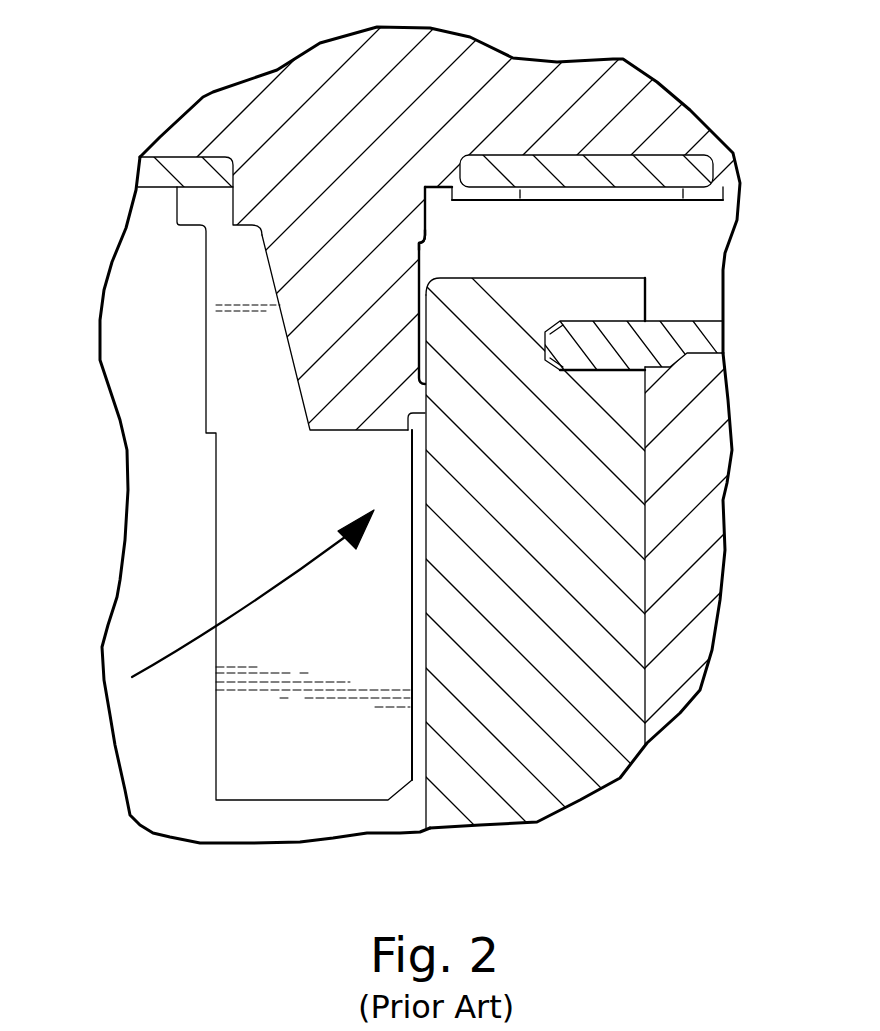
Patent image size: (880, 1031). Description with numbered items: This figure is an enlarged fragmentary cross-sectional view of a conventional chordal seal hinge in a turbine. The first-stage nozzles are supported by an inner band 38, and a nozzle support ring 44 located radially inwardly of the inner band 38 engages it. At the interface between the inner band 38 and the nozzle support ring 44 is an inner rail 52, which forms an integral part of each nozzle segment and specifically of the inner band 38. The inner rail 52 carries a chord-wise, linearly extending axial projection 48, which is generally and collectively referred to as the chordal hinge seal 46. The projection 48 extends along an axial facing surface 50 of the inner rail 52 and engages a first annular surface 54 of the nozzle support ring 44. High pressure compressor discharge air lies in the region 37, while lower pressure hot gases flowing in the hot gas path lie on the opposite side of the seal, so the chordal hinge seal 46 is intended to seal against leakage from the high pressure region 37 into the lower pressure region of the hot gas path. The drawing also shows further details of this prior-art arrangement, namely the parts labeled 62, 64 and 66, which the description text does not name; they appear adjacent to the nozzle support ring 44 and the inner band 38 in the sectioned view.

The region 37 is at (155, 592).
The inner band 38 is at (263, 117).
The nozzle support ring 44 is at (570, 787).
The chordal hinge seal 46 is at (120, 328).
The axial projection 48 is at (418, 393).
The axial facing surface 50 is at (420, 275).
The inner rail 52 is at (300, 250).
The first annular surface 54 is at (425, 582).
The chamber 62 is at (583, 253).
The key bar 64 is at (635, 278).
The thin plate 66 is at (648, 190).